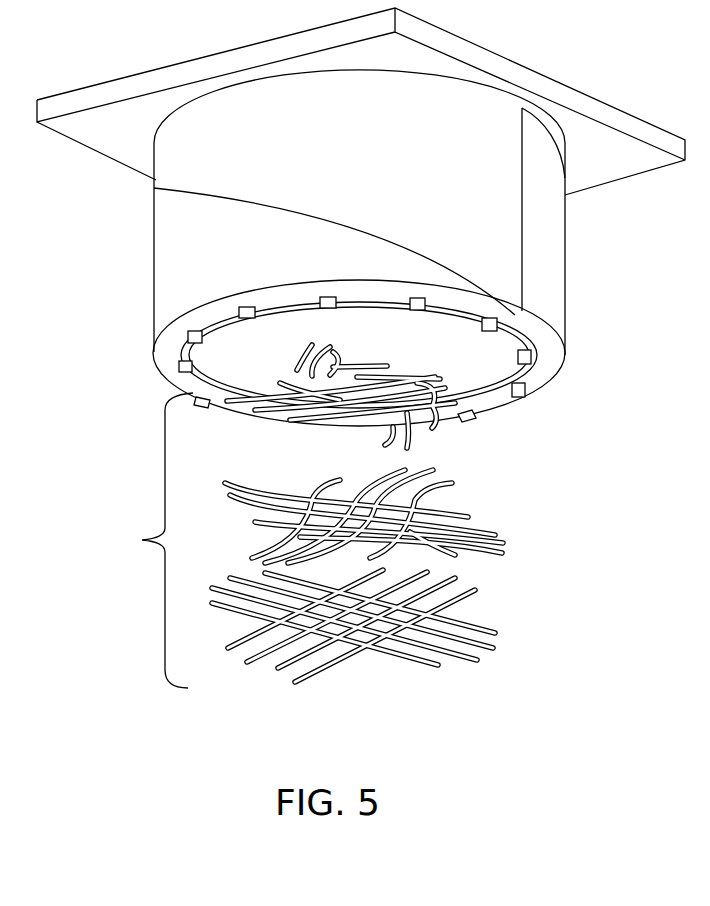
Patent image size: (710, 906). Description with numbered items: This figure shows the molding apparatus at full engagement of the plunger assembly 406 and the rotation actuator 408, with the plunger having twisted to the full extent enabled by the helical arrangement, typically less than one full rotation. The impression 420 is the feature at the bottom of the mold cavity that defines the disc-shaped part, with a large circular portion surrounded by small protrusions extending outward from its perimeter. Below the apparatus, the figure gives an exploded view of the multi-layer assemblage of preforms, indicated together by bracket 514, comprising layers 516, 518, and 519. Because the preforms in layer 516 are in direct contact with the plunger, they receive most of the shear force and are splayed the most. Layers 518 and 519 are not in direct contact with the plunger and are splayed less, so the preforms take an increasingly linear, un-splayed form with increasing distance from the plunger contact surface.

The plunger assembly 406 is at (193, 161).
The rotation actuator 408 is at (188, 227).
The impression 420 is at (223, 375).
The set of flow inserts 514 is at (144, 540).
The layer 516 is at (423, 413).
The layer 518 is at (503, 525).
The layer 519 is at (485, 605).